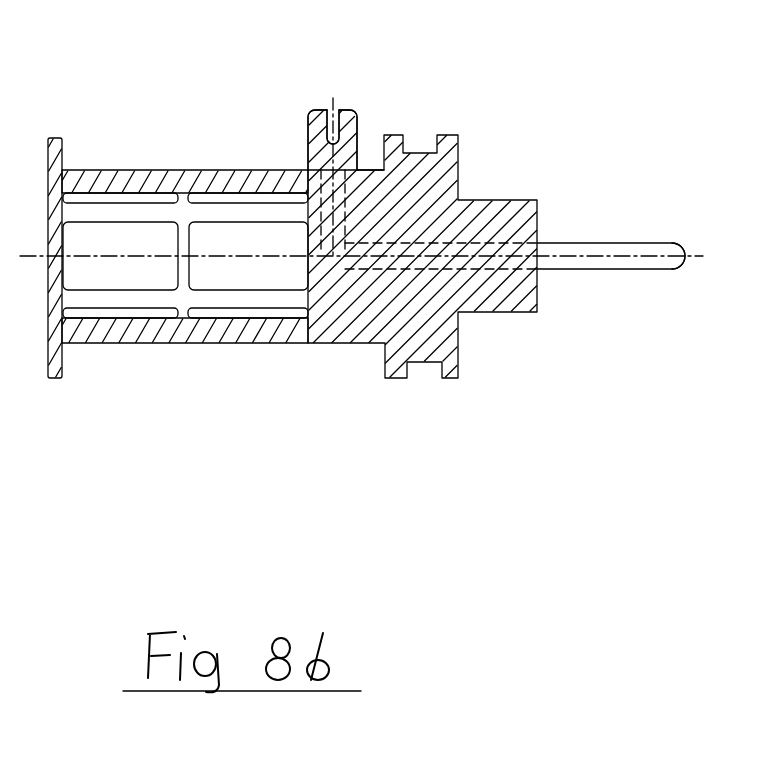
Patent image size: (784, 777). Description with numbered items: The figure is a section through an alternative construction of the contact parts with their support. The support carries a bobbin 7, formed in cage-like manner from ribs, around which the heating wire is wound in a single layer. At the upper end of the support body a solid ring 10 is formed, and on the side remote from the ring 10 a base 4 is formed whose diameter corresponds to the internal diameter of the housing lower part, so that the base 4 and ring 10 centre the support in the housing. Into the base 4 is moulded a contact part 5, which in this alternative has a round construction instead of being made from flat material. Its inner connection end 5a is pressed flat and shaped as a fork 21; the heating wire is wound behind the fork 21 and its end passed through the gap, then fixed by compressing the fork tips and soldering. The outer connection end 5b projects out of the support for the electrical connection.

The base 4 is at (440, 173).
The contact part 5 is at (584, 286).
The inner connection end 5a is at (347, 152).
The outer connection end 5b is at (662, 243).
The bobbin 7 is at (199, 152).
The ring 10 is at (63, 147).
The fork 21 is at (333, 122).